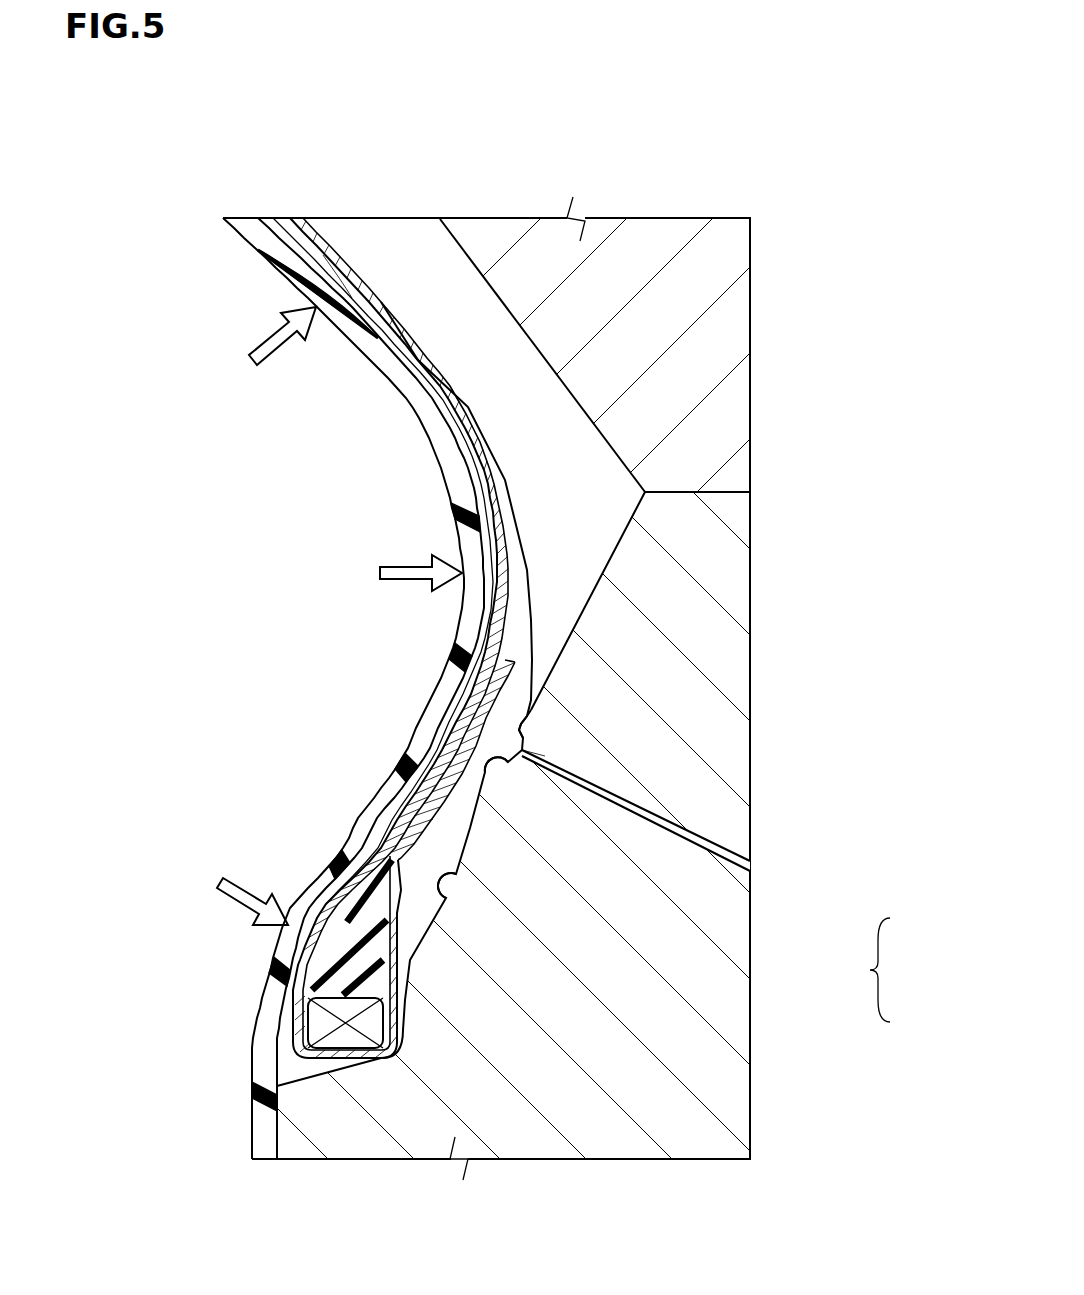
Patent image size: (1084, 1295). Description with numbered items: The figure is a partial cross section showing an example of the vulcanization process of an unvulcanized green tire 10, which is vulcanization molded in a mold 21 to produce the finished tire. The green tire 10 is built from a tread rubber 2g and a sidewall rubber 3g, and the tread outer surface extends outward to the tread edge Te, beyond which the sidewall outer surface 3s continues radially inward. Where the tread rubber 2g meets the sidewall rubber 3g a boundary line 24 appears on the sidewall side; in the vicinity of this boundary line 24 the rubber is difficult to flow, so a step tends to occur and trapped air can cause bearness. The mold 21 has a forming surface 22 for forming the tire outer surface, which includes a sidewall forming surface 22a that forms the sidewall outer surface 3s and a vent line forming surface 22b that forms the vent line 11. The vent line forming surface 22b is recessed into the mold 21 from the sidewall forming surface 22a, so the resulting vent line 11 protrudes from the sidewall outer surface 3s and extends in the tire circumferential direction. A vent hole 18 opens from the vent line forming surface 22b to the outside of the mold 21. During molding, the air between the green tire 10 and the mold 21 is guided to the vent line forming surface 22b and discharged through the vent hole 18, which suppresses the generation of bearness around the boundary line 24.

The green tire 10 is at (519, 371).
The tread rubber 2g is at (573, 459).
The tread edge Te is at (656, 490).
The boundary line 24 is at (530, 712).
The vent line 11 is at (548, 756).
The vent hole 18 is at (703, 840).
The vent line forming surface 22b is at (496, 780).
The sidewall forming surface 22a is at (444, 900).
The forming surface 22 is at (904, 970).
The sidewall rubber 3g is at (460, 773).
The sidewall outer surface 3s is at (420, 968).
The mold 21 is at (574, 1110).